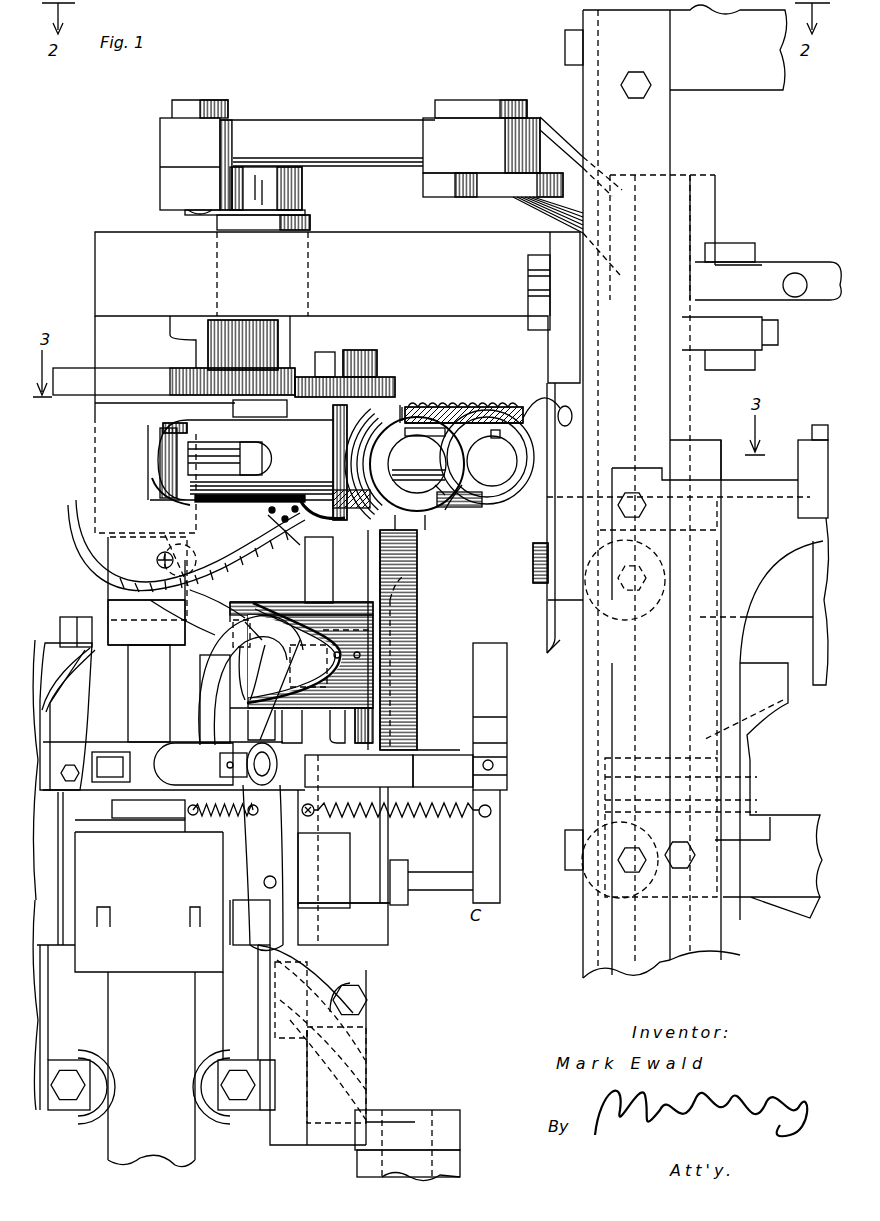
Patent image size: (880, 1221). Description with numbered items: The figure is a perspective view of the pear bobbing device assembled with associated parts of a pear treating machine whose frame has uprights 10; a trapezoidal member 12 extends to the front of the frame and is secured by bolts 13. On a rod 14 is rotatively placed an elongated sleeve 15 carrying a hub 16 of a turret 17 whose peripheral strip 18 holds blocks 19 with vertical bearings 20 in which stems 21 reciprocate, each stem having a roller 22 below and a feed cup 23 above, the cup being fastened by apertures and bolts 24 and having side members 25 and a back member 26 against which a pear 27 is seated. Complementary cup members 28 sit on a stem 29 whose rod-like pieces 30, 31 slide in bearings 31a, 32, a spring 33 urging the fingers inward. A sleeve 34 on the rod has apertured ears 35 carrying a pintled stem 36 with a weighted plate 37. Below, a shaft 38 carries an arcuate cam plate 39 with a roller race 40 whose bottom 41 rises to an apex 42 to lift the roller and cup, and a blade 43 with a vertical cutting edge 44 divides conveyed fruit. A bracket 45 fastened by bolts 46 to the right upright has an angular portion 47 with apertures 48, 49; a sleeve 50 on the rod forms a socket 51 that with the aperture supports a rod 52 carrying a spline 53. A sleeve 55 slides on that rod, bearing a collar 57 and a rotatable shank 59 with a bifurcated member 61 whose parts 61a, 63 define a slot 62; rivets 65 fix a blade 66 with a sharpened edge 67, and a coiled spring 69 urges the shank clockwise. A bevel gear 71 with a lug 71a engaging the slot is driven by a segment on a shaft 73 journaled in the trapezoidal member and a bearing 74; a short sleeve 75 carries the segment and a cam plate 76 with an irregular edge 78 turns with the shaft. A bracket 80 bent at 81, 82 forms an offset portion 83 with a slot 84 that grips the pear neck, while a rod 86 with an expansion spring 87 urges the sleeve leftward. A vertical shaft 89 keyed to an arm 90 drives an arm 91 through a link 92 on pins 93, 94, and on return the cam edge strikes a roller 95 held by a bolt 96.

The uprights 10 is at (668, 165).
The trapezoidal member 12 is at (355, 245).
The bolts 13 is at (538, 300).
The rod 14 is at (128, 720).
The elongated sleeve 15 is at (116, 1022).
The hub 16 is at (105, 965).
The turret 17 is at (120, 905).
The peripheral strip 18 is at (165, 905).
The blocks 19 is at (85, 940).
The vertical bearings 20 is at (232, 950).
The stems 21 is at (73, 968).
The rollers 22 is at (290, 1018).
The feed cup 23 is at (62, 705).
The shaft 24 is at (78, 768).
The side members 25 is at (78, 665).
The back member 26 is at (85, 633).
The pear 27 is at (215, 680).
The complementary cup members 28 is at (60, 632).
The stem 29 is at (265, 855).
The rod-like piece 30 is at (264, 883).
The rod-like piece 31 is at (270, 766).
The bearing 31a is at (405, 772).
The bearing 32 is at (408, 895).
The spring 33 is at (215, 818).
The sleeve 34 is at (110, 582).
The apertured ears 35 is at (235, 580).
The stem 36 is at (225, 598).
The plate 37 is at (232, 613).
The shaft 38 is at (422, 1115).
The cam plate 39 is at (366, 1075).
The roller race 40 is at (366, 1045).
The bottom of the race 41 is at (360, 1096).
The apex 42 is at (366, 1056).
The blade 43 is at (560, 640).
The vertical cutting edge 44 is at (548, 612).
The bracket 45 is at (547, 588).
The bolts 46 is at (533, 565).
The angular portion 47 is at (512, 492).
The aperture 48 is at (497, 486).
The aperture 49 is at (552, 398).
The sleeve 50 is at (150, 446).
The socket 51 is at (188, 462).
The rod 52 is at (190, 488).
The spline 53 is at (480, 406).
The sleeve 55 is at (470, 495).
The collar 57 is at (465, 520).
The shank 59 is at (410, 403).
The bifurcated member 61 is at (296, 513).
The divided part 61a is at (163, 428).
The slot 62 is at (152, 486).
The divided part 63 is at (148, 498).
The rivets 65 is at (286, 524).
The blade 66 is at (85, 540).
The sharpened edge 67 is at (100, 565).
The coiled spring 69 is at (420, 540).
The bevel gear 71 is at (336, 514).
The lug 71a is at (240, 442).
The shaft 73 is at (302, 208).
The bearing 74 is at (305, 224).
The short sleeve 75 is at (150, 405).
The cam plate 76 is at (88, 368).
The irregular edge 78 is at (275, 365).
The bracket 80 is at (417, 662).
The bend 81 is at (420, 760).
The bend 82 is at (333, 555).
The offset portion 83 is at (345, 620).
The slot 84 is at (333, 572).
The rod 86 is at (470, 400).
The expansion spring 87 is at (455, 400).
The vertical shaft 89 is at (705, 185).
The arm 90 is at (553, 148).
The arm 91 is at (160, 190).
The link 92 is at (352, 125).
The pin 93 is at (500, 198).
The pin 94 is at (190, 212).
The roller 95 is at (433, 400).
The bolt 96 is at (378, 360).